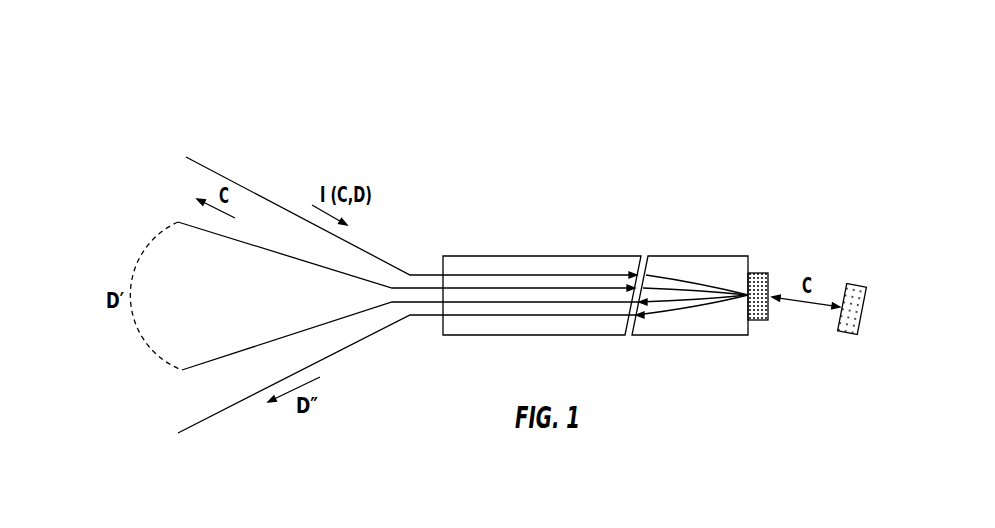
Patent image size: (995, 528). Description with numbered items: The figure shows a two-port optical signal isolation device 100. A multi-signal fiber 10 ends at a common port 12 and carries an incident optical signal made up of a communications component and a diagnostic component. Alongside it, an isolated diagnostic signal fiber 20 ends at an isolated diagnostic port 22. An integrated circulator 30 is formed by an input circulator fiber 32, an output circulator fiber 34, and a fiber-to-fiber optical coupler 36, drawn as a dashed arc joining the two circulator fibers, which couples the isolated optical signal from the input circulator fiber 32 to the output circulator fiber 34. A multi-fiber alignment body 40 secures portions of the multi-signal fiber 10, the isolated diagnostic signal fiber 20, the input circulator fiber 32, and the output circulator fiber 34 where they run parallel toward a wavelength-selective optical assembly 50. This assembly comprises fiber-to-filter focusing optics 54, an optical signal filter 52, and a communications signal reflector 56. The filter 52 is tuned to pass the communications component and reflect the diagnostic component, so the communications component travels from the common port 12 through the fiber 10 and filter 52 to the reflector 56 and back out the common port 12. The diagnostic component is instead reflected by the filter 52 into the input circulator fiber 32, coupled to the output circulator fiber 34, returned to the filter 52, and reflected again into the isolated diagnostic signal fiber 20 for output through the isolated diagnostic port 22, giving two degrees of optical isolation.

The optical signal isolation device 100 is at (106, 48).
The multi-signal fiber 10 is at (258, 194).
The common port 12 is at (185, 135).
The isolated diagnostic signal fiber 20 is at (228, 410).
The isolated diagnostic port 22 is at (165, 458).
The integrated circulator 30 is at (345, 298).
The input circulator fiber 32 is at (182, 372).
The output circulator fiber 34 is at (178, 222).
The fiber-to-fiber optical coupler 36 is at (137, 263).
The multi-fiber alignment body 40 is at (465, 256).
The wavelength-selective optical assembly 50 is at (722, 270).
The optical signal filter 52 is at (755, 273).
The fiber-to-filter focusing optics 54 is at (688, 336).
The communications signal reflector 56 is at (857, 287).